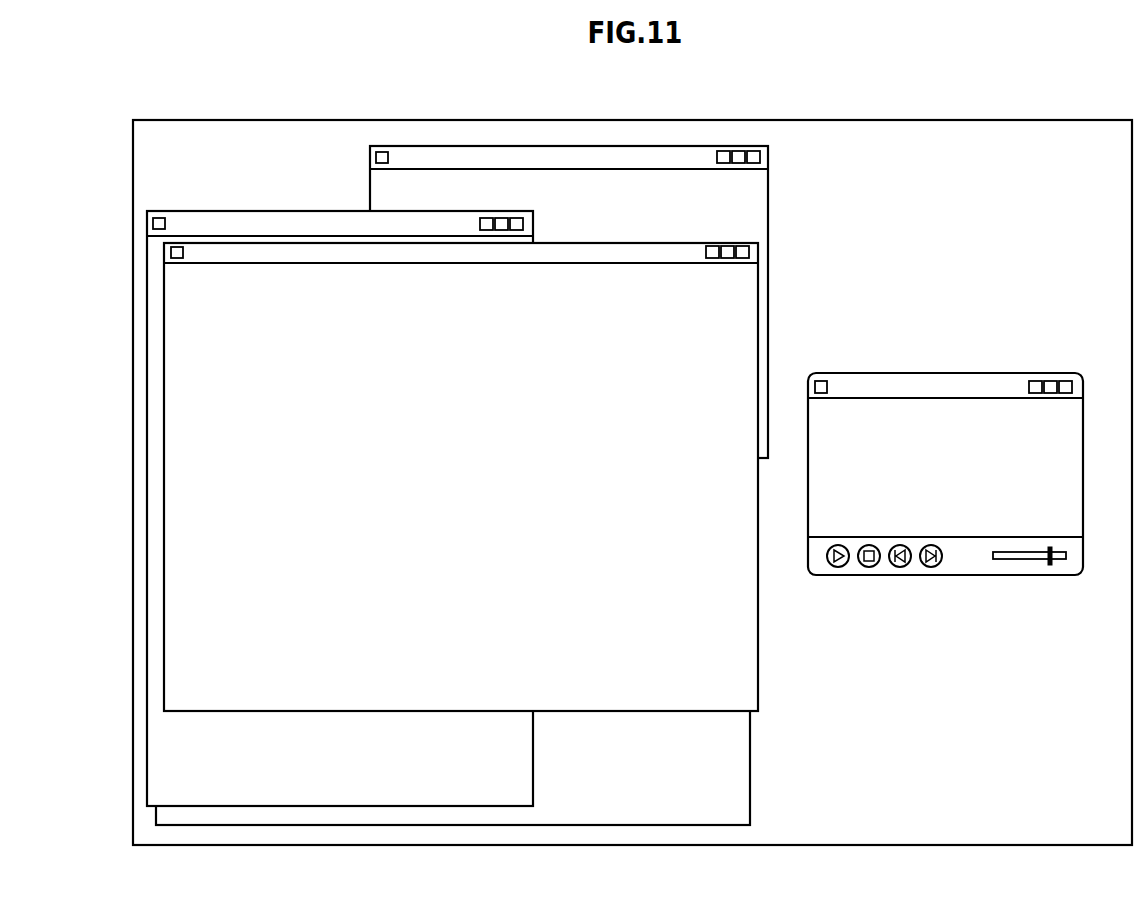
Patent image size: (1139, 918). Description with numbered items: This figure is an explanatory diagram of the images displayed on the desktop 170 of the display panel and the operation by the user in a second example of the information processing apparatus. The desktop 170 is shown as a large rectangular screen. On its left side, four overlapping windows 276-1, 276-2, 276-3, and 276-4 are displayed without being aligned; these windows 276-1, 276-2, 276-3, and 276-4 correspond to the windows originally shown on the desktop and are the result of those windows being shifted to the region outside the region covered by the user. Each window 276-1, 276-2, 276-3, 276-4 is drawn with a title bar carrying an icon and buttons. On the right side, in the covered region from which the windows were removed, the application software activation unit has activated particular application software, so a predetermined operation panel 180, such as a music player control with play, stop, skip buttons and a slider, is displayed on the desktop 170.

The desktop 170 is at (960, 120).
The operation panel 180 is at (946, 372).
The window 276-1 is at (620, 242).
The window 276-2 is at (230, 210).
The window 276-3 is at (462, 145).
The window 276-4 is at (592, 826).